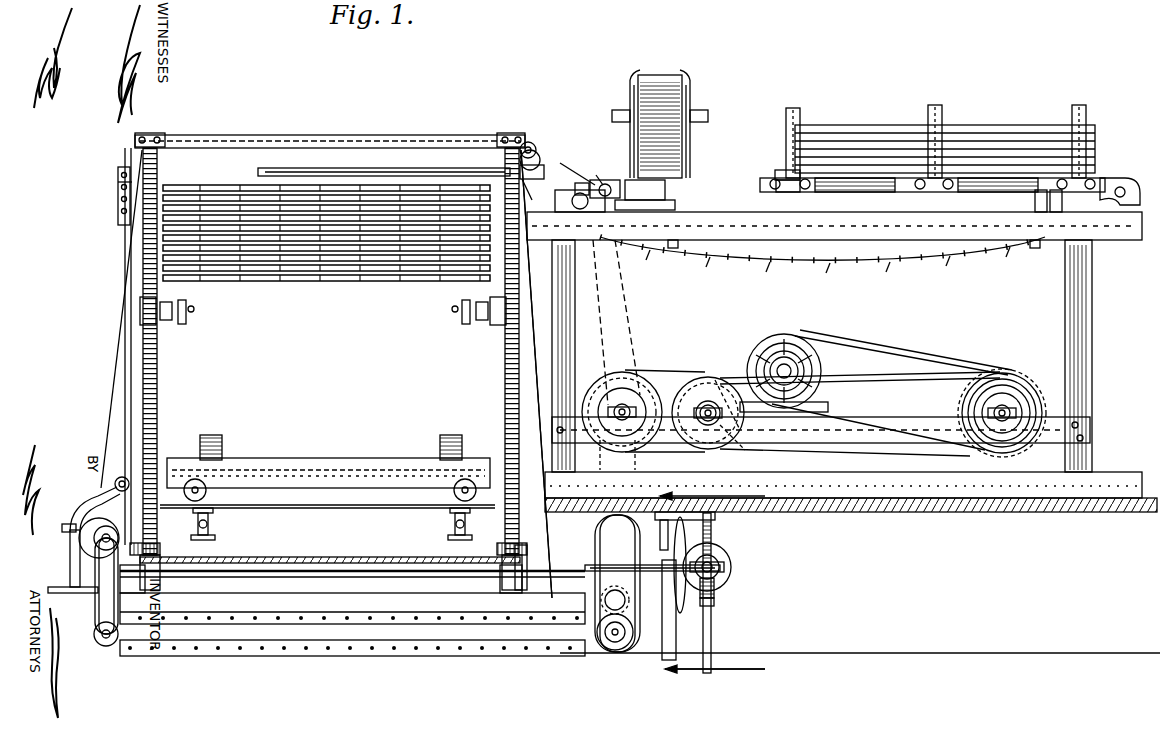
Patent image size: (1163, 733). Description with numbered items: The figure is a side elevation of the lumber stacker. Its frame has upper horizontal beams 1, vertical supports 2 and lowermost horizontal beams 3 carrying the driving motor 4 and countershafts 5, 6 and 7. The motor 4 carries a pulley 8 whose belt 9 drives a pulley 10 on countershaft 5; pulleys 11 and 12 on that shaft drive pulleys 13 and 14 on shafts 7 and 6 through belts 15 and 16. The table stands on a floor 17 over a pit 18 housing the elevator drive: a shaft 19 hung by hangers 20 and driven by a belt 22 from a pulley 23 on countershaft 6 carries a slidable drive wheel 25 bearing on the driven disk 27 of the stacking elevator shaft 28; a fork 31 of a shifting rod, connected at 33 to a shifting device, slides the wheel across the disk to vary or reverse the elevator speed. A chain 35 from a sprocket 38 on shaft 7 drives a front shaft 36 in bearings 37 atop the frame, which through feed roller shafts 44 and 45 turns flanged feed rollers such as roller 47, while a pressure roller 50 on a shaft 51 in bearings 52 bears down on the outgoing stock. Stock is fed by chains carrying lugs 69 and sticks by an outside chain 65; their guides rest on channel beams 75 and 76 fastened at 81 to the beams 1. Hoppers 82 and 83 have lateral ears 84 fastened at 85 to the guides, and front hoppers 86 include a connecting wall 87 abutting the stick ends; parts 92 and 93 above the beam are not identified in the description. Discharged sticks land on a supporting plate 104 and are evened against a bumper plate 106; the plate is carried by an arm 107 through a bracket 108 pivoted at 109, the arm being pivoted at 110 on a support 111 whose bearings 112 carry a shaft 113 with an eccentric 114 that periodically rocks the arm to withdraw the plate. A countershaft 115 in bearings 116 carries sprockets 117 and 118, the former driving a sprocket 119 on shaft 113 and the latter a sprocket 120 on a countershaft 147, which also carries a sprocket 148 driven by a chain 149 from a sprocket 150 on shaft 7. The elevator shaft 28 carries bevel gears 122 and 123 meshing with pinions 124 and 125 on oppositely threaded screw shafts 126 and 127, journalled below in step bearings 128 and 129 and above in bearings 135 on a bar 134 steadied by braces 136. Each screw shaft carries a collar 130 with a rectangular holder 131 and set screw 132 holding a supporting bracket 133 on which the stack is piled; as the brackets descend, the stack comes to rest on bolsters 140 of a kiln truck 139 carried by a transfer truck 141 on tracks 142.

The upper horizontal beams 1 is at (780, 214).
The vertical supports 2 is at (1092, 348).
The lowermost horizontal beams 3 is at (770, 445).
The driving motor 4 is at (785, 345).
The countershaft 5 is at (1005, 400).
The countershaft 6 is at (708, 405).
The countershaft 7 is at (630, 400).
The pulley 8 is at (795, 360).
The belt 9 is at (860, 368).
The pulley 10 is at (1000, 390).
The pulley 11 is at (1030, 395).
The pulley 12 is at (1038, 410).
The pulley 13 is at (640, 380).
The pulley 14 is at (690, 390).
The belt 15 is at (690, 370).
The belt 16 is at (890, 372).
The floor 17 is at (905, 512).
The pit 18 is at (590, 653).
The shaft 19 is at (720, 568).
The hangers 20 is at (712, 536).
The belt 22 is at (700, 458).
The pulley 23 is at (725, 380).
The drive wheel 25 is at (720, 580).
The driven disk 27 is at (682, 610).
The stacking elevator shaft 28 is at (630, 562).
The fork 31 is at (735, 575).
The connection 33 is at (715, 600).
The chain 35 is at (622, 283).
The front shaft 36 is at (604, 185).
The bearings 37 is at (582, 184).
The sprocket 38 is at (605, 385).
The feed roller shaft 44 is at (575, 210).
The feed roller shaft 45 is at (536, 374).
The feed roller 47 is at (595, 178).
The pressure roller 50 is at (527, 142).
The pressure roller shaft 51 is at (535, 150).
The bearings 52 is at (540, 170).
The outside chain 65 is at (820, 264).
The lugs 69 is at (870, 266).
The channel beam 75 is at (700, 200).
The channel beam 76 is at (1040, 200).
The fastening 81 is at (668, 248).
The hopper 82 is at (940, 98).
The hopper 83 is at (1079, 107).
The lateral ears 84 is at (935, 192).
The fastening 85 is at (900, 192).
The front hoppers 86 is at (793, 108).
The connecting wall 87 is at (785, 146).
The stack of sheets 92 is at (655, 75).
The guide rail 93 is at (630, 90).
The supporting plate 104 is at (210, 188).
The bumper plate 106 is at (195, 185).
The arm 107 is at (125, 300).
The bracket 108 is at (118, 195).
The pivotal connection 109 is at (116, 183).
The pivot 110 is at (115, 486).
The support 111 is at (70, 555).
The bearings 112 is at (64, 528).
The shaft 113 is at (88, 515).
The eccentric 114 is at (82, 530).
The countershaft 115 is at (110, 646).
The bearings 116 is at (86, 593).
The sprocket 117 is at (100, 645).
The sprocket 118 is at (140, 644).
The sprocket 119 is at (95, 538).
The sprocket 120 is at (698, 663).
The bevel gear 122 is at (150, 597).
The bevel gear 123 is at (530, 580).
The pinion 124 is at (160, 560).
The pinion 125 is at (500, 555).
The screw shaft 126 is at (158, 430).
The screw shaft 127 is at (505, 370).
The step bearing 128 is at (155, 582).
The step bearing 129 is at (510, 585).
The collar 130 is at (160, 322).
The rectangular holder 131 is at (175, 312).
The set screw 132 is at (190, 300).
The supporting brackets 133 is at (195, 309).
The bar 134 is at (325, 130).
The bearings 135 is at (135, 137).
The braces 136 is at (112, 340).
The kiln truck 139 is at (345, 462).
The bolsters 140 is at (224, 442).
The transfer truck 141 is at (300, 510).
The tracks 142 is at (195, 558).
The countershaft 147 is at (615, 650).
The sprocket 148 is at (617, 595).
The chain 149 is at (635, 530).
The sprocket 150 is at (618, 461).